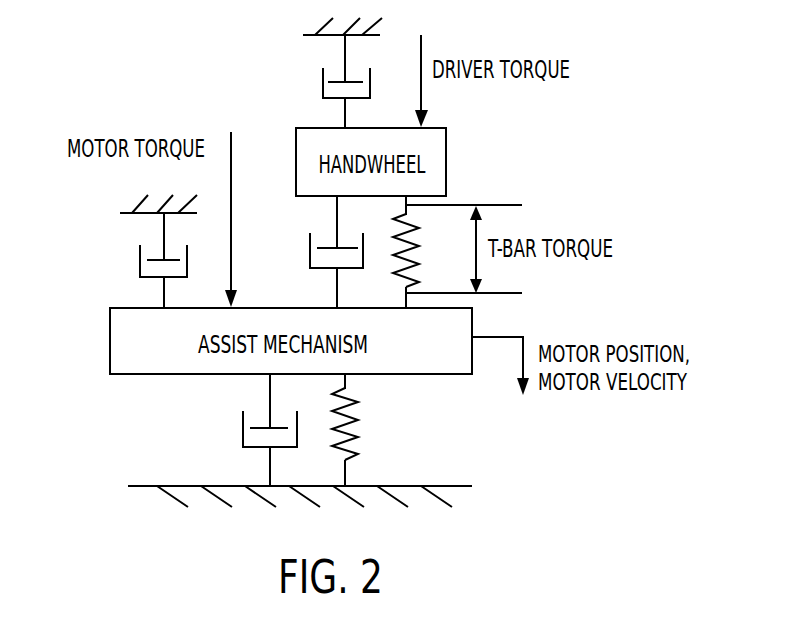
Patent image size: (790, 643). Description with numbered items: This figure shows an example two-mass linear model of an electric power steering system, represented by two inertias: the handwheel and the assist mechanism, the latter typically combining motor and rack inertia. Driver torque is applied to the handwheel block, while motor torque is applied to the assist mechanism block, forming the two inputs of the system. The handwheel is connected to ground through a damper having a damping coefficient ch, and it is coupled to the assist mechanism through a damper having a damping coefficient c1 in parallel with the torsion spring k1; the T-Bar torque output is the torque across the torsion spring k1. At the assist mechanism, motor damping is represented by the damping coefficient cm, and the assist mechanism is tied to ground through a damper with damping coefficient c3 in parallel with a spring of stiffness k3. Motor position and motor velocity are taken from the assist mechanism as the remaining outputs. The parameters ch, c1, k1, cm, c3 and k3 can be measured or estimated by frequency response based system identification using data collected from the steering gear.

The handwheel damping coefficient ch is at (350, 73).
The torsion bar damping coefficient c1 is at (318, 252).
The torsion spring k1 is at (421, 252).
The motor damping coefficient cm is at (147, 251).
The assist mechanism damping coefficient c3 is at (253, 430).
The assist mechanism stiffness k3 is at (363, 430).